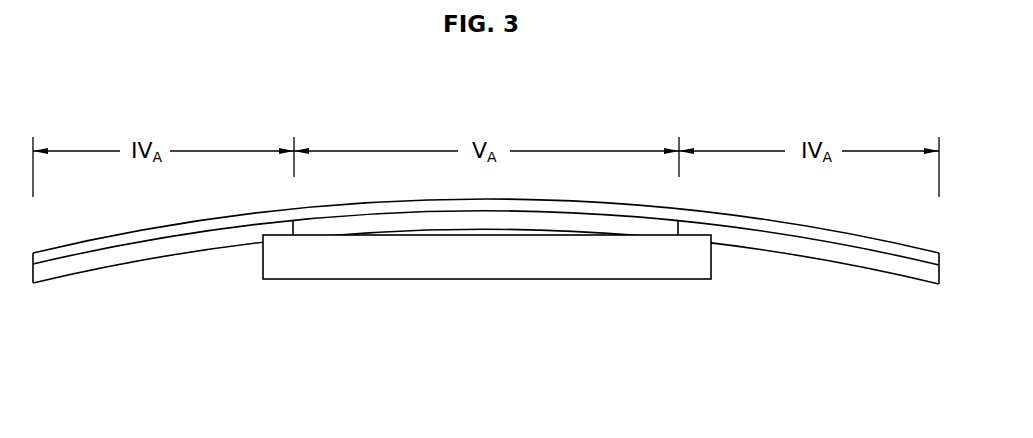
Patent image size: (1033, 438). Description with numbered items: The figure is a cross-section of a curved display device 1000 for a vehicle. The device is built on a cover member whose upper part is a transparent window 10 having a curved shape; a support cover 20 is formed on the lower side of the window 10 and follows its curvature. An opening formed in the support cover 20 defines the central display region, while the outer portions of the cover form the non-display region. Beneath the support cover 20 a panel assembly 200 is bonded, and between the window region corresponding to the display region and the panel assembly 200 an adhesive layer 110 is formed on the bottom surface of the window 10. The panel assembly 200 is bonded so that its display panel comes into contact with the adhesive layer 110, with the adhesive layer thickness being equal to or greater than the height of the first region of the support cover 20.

The curved display device 1000 is at (180, 89).
The transparent window 10 is at (853, 240).
The support cover 20 is at (887, 263).
The adhesive layer 110 is at (520, 224).
The panel assembly 200 is at (605, 263).